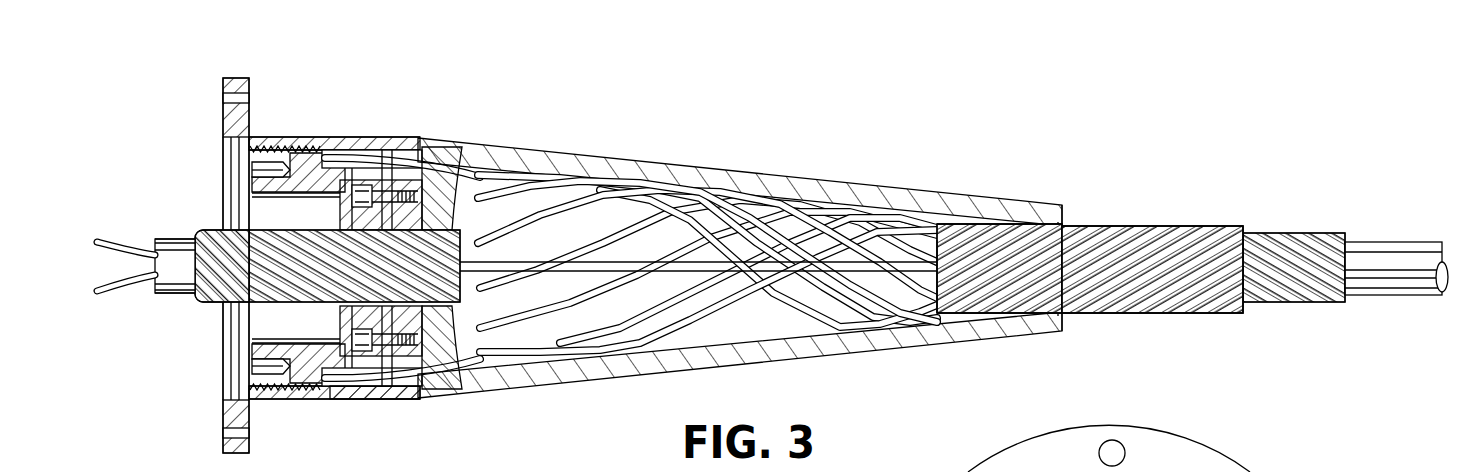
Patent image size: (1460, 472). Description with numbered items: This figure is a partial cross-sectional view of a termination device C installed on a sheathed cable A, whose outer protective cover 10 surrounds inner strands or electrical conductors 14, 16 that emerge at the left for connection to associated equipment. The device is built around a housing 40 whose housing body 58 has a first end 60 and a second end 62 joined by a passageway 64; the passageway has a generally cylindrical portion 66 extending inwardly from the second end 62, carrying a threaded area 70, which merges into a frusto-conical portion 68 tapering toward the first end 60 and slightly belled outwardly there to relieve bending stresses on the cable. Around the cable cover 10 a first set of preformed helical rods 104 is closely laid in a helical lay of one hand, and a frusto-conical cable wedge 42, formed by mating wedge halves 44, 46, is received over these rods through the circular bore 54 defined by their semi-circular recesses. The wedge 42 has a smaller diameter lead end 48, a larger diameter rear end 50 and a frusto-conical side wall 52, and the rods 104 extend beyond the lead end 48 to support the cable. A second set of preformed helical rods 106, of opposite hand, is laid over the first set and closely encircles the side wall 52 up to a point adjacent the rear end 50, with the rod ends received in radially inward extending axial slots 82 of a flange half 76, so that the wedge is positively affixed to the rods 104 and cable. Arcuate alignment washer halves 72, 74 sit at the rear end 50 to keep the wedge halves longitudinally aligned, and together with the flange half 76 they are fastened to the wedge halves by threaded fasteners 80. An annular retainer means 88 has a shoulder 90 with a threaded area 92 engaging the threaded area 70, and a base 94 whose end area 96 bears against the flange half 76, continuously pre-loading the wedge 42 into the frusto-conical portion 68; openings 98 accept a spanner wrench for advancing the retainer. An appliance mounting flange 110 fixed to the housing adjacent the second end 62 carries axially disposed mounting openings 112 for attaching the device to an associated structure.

The outer protective cover 10 is at (167, 294).
The inner strand 14 is at (121, 245).
The inner strand 16 is at (125, 291).
The housing 40 is at (525, 140).
The cable wedge 42 is at (702, 214).
The wedge half 44 is at (664, 248).
The wedge half 46 is at (551, 303).
The lead end 48 is at (965, 230).
The rear end 50 is at (345, 256).
The frusto-conical side wall 52 is at (762, 208).
The bore 54 is at (457, 252).
The housing body 58 is at (382, 398).
The first end 60 is at (1067, 213).
The second end 62 is at (255, 153).
The passageway 64 is at (272, 322).
The cylindrical portion 66 is at (363, 384).
The frusto-conical portion 68 is at (604, 192).
The threaded area 70 is at (337, 170).
The alignment washer half 72 is at (413, 232).
The alignment washer half 74 is at (402, 320).
The flange half 76 is at (355, 221).
The threaded fastener 80 is at (353, 333).
The axial slot 82 is at (398, 137).
The retainer means 88 is at (238, 203).
The shoulder 90 is at (292, 152).
The threaded area 92 is at (254, 150).
The base 94 is at (268, 182).
The end area 96 is at (328, 386).
The opening 98 is at (262, 167).
The first set of preformed helical rods 104 is at (208, 303).
The second set of preformed helical rods 106 is at (1120, 224).
The appliance mounting flange 110 is at (223, 125).
The mounting opening 112 is at (248, 100).
The sheathed cable A is at (151, 213).
The termination device C is at (876, 176).